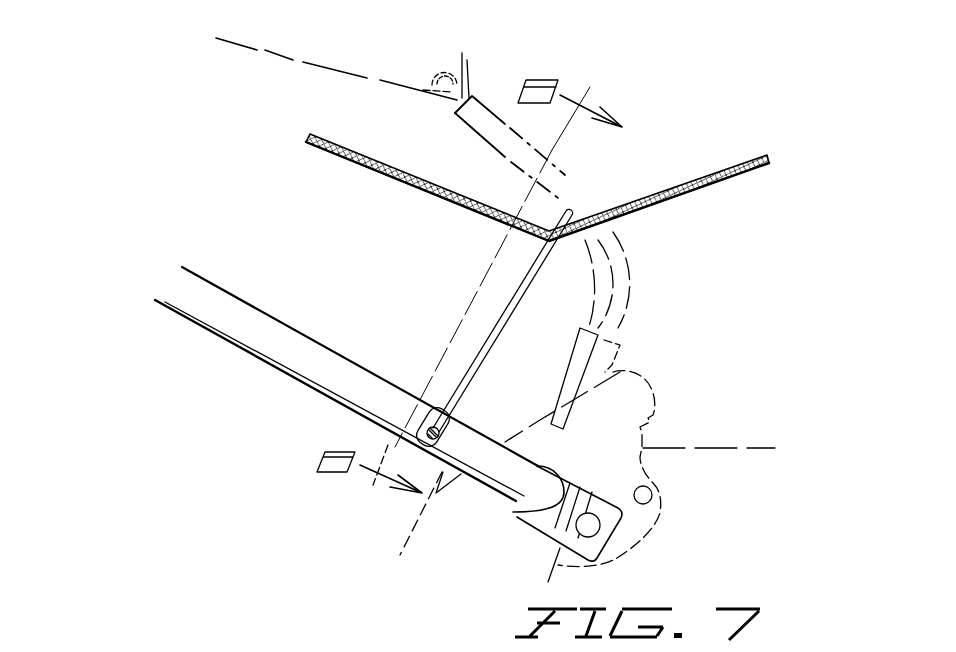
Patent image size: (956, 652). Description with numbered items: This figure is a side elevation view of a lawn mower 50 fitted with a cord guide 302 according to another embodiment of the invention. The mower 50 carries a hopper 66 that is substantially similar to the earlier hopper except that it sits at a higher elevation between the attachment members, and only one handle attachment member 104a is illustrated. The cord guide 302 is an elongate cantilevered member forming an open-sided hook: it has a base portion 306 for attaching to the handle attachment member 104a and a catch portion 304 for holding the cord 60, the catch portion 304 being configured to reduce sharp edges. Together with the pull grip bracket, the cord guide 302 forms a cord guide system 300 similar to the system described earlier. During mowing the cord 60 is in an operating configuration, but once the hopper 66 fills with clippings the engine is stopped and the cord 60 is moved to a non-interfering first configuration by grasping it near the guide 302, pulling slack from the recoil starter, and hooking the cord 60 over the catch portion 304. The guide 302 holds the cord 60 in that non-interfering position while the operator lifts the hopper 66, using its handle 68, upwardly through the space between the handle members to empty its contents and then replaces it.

The cord guide system 300 is at (219, 213).
The hopper 66 is at (291, 58).
The lawn mower 50 is at (421, 66).
The handle 68 is at (462, 53).
The cord 60 is at (738, 164).
The catch portion 304 is at (577, 217).
The cord guide 302 is at (492, 350).
The base portion 306 is at (423, 418).
The handle attachment member 104a is at (287, 378).